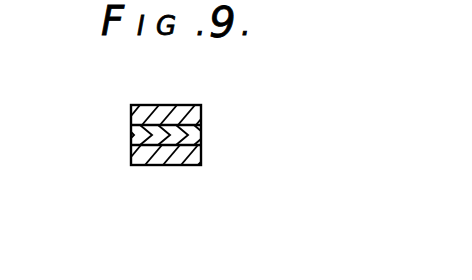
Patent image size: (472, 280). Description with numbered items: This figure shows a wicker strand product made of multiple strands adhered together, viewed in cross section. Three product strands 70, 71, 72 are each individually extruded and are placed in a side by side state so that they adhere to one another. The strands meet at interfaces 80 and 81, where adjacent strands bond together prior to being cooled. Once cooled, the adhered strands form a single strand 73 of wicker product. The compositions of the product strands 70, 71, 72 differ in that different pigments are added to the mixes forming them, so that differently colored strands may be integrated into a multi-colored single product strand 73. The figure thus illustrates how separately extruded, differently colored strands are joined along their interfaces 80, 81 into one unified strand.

The product strand 70 is at (201, 105).
The product strand 71 is at (201, 133).
The product strand 72 is at (201, 154).
The single strand 73 is at (192, 186).
The interface 80 is at (150, 120).
The interface 81 is at (157, 152).